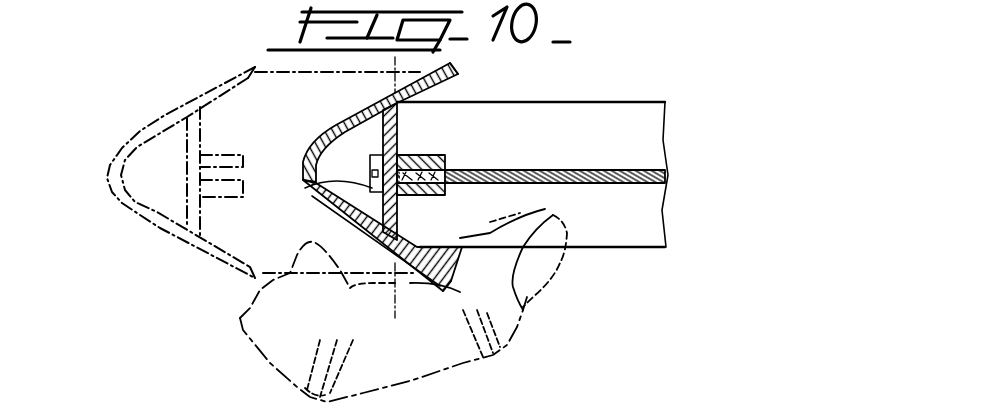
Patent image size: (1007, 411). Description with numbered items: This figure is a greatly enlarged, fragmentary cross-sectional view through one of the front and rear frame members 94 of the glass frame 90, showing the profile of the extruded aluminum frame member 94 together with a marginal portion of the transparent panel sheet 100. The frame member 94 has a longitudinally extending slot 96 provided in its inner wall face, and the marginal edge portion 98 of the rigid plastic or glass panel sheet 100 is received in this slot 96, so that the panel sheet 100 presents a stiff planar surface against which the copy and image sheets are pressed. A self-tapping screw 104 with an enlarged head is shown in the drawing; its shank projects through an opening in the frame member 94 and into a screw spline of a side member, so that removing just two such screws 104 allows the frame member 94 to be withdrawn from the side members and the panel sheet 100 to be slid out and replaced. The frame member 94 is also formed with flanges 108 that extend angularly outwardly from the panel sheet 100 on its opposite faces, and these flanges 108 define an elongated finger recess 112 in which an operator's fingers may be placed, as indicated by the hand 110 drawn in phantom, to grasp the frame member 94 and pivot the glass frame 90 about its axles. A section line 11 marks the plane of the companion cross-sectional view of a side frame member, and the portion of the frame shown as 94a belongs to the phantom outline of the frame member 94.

The glass frame 90 is at (553, 102).
The front and rear elongated frame member 94 is at (343, 124).
The frame flange / clip band 94a is at (309, 150).
The longitudinally extending slot 96 is at (448, 170).
The marginal edge portion 98 is at (402, 157).
The transparent panel sheet 100 is at (560, 168).
The self-tapping screw 104 is at (317, 187).
The flange 108 is at (455, 72).
The hand 110 is at (530, 310).
The finger recess 112 is at (545, 209).
The section line 11- 11 is at (403, 71).